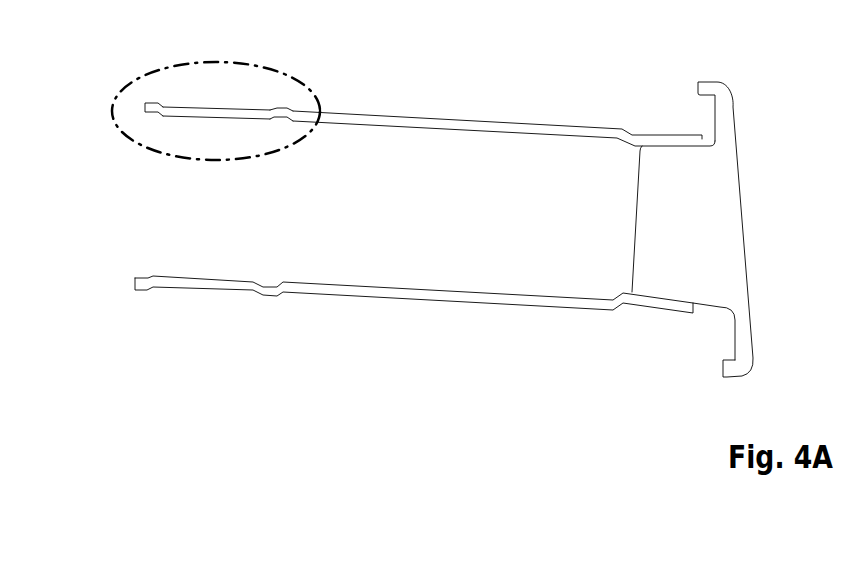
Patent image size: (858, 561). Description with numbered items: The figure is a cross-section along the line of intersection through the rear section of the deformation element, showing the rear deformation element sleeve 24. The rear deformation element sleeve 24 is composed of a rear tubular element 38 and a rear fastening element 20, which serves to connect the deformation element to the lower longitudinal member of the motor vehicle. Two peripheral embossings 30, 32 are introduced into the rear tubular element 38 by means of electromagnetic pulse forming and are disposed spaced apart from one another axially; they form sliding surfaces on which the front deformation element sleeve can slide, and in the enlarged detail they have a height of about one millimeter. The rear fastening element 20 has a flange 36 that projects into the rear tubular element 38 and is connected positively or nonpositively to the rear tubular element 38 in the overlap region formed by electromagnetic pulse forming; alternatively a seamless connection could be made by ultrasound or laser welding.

The fastening element 20 is at (721, 108).
The rear deformation element sleeve 24 is at (494, 84).
The peripheral embossing 30 is at (283, 110).
The peripheral embossing 32 is at (154, 103).
The flange 36 is at (690, 279).
The rear tubular element 38 is at (417, 295).